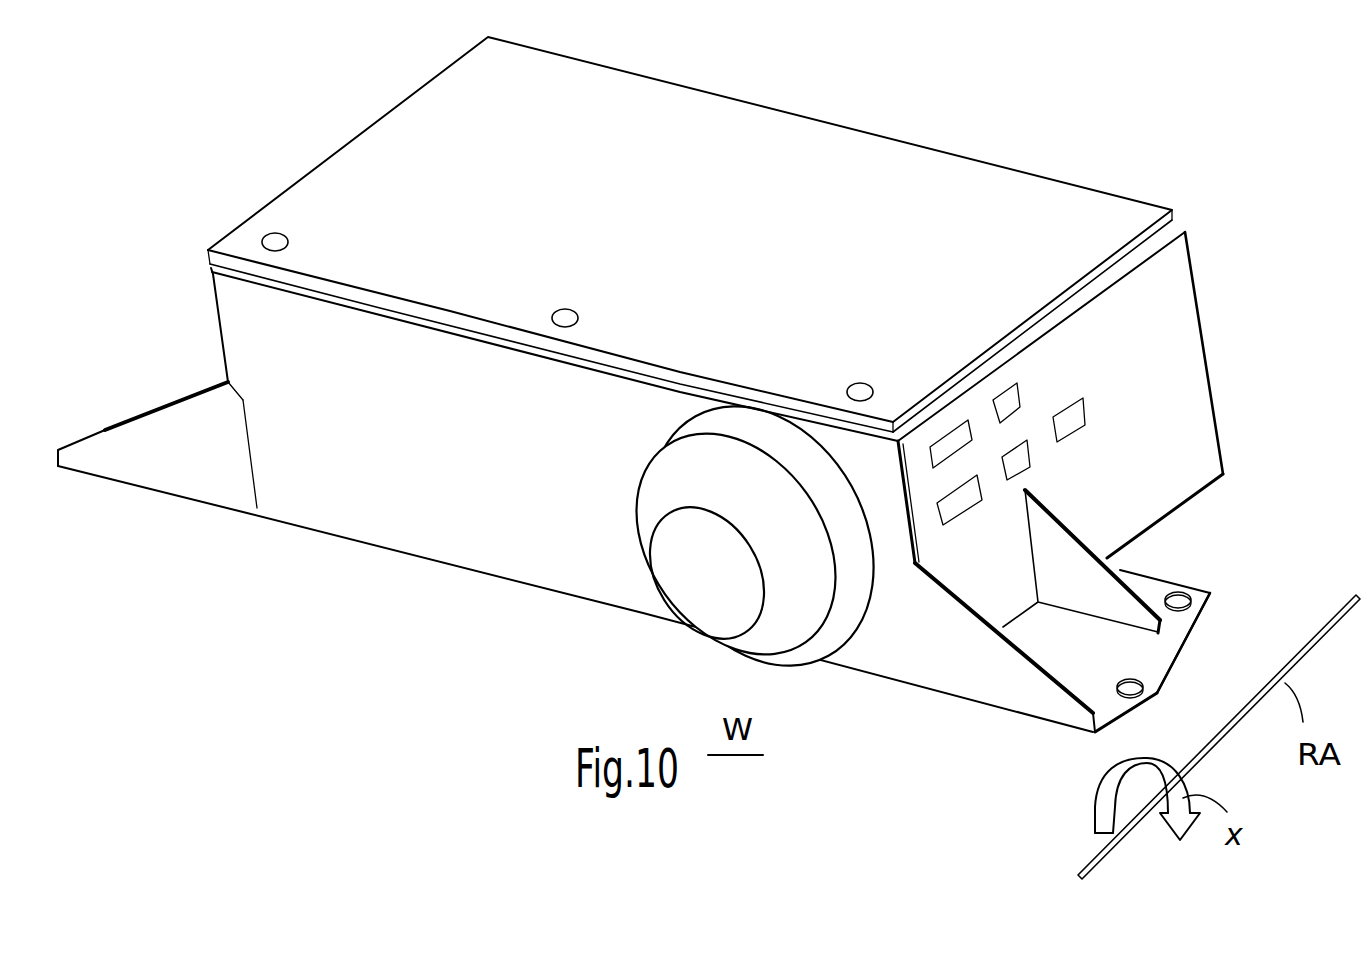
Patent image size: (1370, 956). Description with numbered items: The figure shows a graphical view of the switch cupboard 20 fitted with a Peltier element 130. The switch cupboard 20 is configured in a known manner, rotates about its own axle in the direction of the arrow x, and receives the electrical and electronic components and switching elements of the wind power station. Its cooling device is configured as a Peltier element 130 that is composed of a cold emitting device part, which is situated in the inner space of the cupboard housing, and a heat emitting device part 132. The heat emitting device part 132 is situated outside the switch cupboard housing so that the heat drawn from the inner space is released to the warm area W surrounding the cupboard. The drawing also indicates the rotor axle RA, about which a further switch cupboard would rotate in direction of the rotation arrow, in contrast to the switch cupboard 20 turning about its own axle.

The switch cupboard 20 is at (640, 395).
The Peltier element 130 is at (641, 594).
The heat emitting device part 132 is at (790, 638).